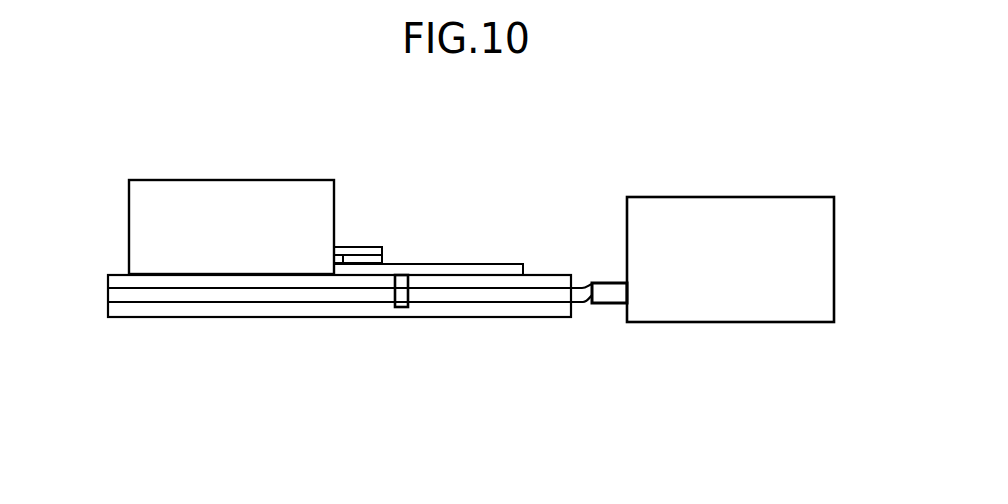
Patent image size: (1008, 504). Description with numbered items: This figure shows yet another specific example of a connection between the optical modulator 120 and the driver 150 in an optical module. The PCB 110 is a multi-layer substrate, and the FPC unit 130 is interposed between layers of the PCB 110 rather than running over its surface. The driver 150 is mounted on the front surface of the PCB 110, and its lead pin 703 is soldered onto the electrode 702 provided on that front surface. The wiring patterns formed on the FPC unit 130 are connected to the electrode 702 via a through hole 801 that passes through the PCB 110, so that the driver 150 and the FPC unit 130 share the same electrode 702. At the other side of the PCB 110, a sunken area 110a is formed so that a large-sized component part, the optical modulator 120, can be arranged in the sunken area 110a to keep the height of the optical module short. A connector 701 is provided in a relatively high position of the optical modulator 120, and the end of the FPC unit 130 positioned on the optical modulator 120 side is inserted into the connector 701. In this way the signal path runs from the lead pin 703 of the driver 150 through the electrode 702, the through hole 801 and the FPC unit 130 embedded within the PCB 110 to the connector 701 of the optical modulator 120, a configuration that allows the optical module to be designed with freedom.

The driver 150 is at (251, 181).
The lead pin 703 is at (358, 247).
The electrode 702 is at (423, 264).
The Printed Circuits Board (PCB) 110 is at (301, 318).
The through hole 801 is at (398, 308).
The Flexible Printed Circuits (FPC) unit 130 is at (580, 288).
The connector 701 is at (611, 283).
The optical modulator 120 is at (781, 184).
The sunken area 110a is at (602, 311).